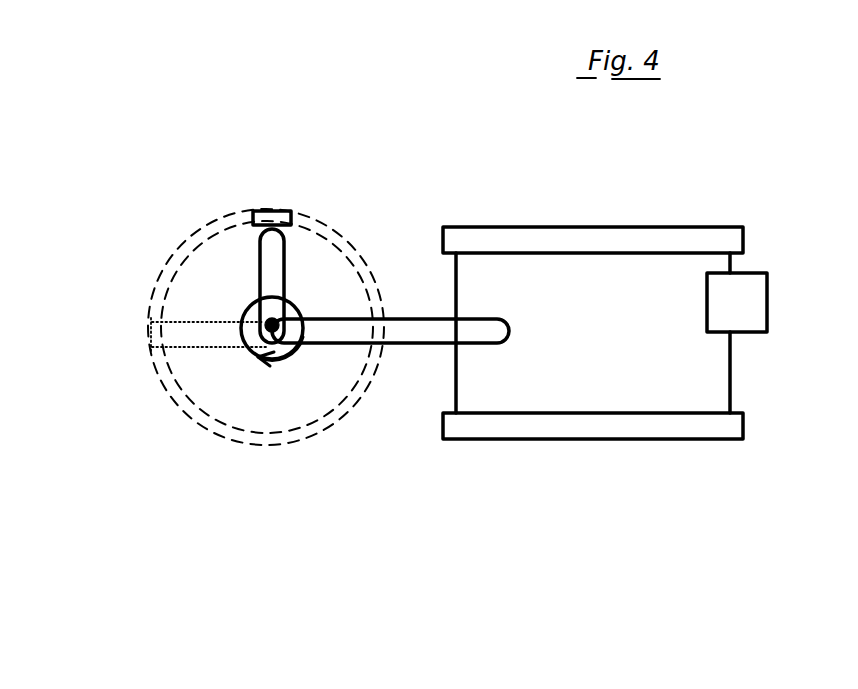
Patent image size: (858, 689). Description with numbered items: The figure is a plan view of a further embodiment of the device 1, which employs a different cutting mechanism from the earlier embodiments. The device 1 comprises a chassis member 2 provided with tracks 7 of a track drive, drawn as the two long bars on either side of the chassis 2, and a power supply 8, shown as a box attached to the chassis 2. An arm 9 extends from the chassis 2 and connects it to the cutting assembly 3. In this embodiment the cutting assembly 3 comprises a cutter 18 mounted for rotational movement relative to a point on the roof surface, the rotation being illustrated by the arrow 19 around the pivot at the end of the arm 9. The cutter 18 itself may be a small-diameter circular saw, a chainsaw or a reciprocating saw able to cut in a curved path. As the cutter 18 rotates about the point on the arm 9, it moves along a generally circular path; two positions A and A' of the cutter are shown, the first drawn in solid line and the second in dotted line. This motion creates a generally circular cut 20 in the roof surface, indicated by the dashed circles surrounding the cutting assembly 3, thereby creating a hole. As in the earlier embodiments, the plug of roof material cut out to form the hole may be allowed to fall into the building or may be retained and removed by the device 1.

The device 1 is at (378, 562).
The chassis member 2 is at (628, 359).
The cutting assembly 3 is at (171, 448).
The tracks 7 is at (600, 232).
The power supply 8 is at (748, 303).
The arm 9 is at (426, 333).
The cutter 18 is at (270, 205).
The arrow 19 is at (286, 362).
The circular cut 20 is at (290, 432).
The position A is at (293, 286).
The position A' is at (209, 307).